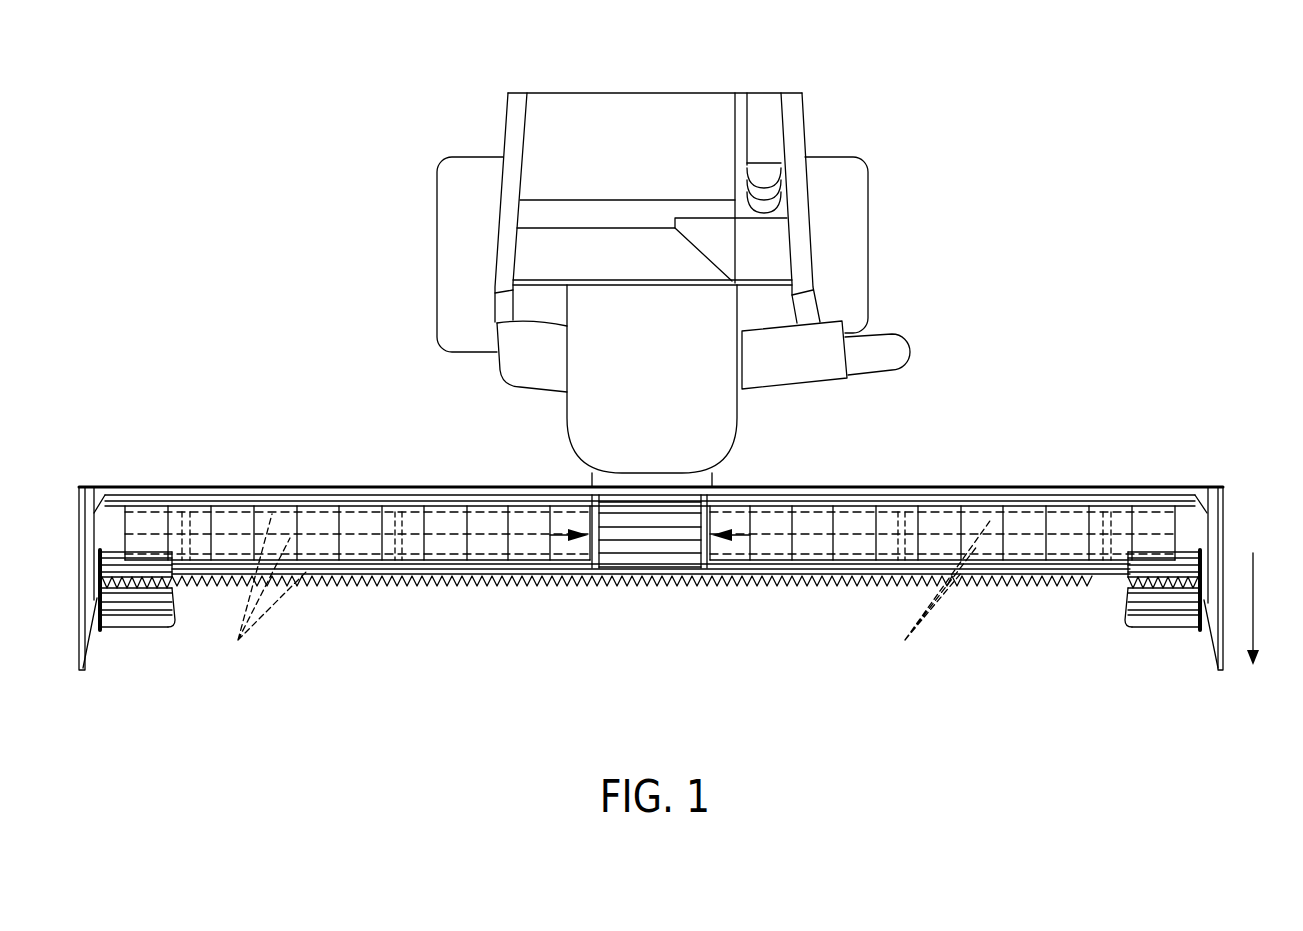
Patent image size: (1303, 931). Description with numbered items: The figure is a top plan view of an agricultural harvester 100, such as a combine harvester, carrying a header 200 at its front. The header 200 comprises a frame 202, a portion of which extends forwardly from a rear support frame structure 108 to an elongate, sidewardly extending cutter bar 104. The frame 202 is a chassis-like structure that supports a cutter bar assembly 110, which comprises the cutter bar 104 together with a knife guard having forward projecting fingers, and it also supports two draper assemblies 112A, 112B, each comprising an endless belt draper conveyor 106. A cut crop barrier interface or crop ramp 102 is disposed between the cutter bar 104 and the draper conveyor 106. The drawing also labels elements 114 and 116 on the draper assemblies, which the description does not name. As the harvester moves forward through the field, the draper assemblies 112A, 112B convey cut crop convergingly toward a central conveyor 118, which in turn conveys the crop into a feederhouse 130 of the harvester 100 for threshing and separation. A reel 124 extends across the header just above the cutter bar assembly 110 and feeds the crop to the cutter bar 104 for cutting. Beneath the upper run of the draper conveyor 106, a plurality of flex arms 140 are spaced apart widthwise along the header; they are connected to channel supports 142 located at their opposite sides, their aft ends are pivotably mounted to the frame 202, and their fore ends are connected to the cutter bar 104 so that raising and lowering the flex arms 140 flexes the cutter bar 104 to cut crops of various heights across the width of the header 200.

The agricultural harvester 100 is at (972, 132).
The crop ramp 102 is at (387, 585).
The cutter bar 104 is at (483, 584).
The draper conveyor 106 is at (353, 523).
The rear support frame structure 108 is at (203, 488).
The cutter bar assembly 110 is at (783, 602).
The first draper assembly 112A is at (471, 487).
The second draper assembly 112B is at (846, 487).
The draper belt 114 is at (538, 546).
The crop conveying surface 116 is at (524, 522).
The central conveyor 118 is at (650, 528).
The reel 124 is at (132, 628).
The feederhouse 130 is at (712, 475).
The flex arms 140 is at (172, 522).
The channel supports 142 is at (604, 595).
The header 200 is at (1107, 466).
The frame 202 is at (1182, 487).